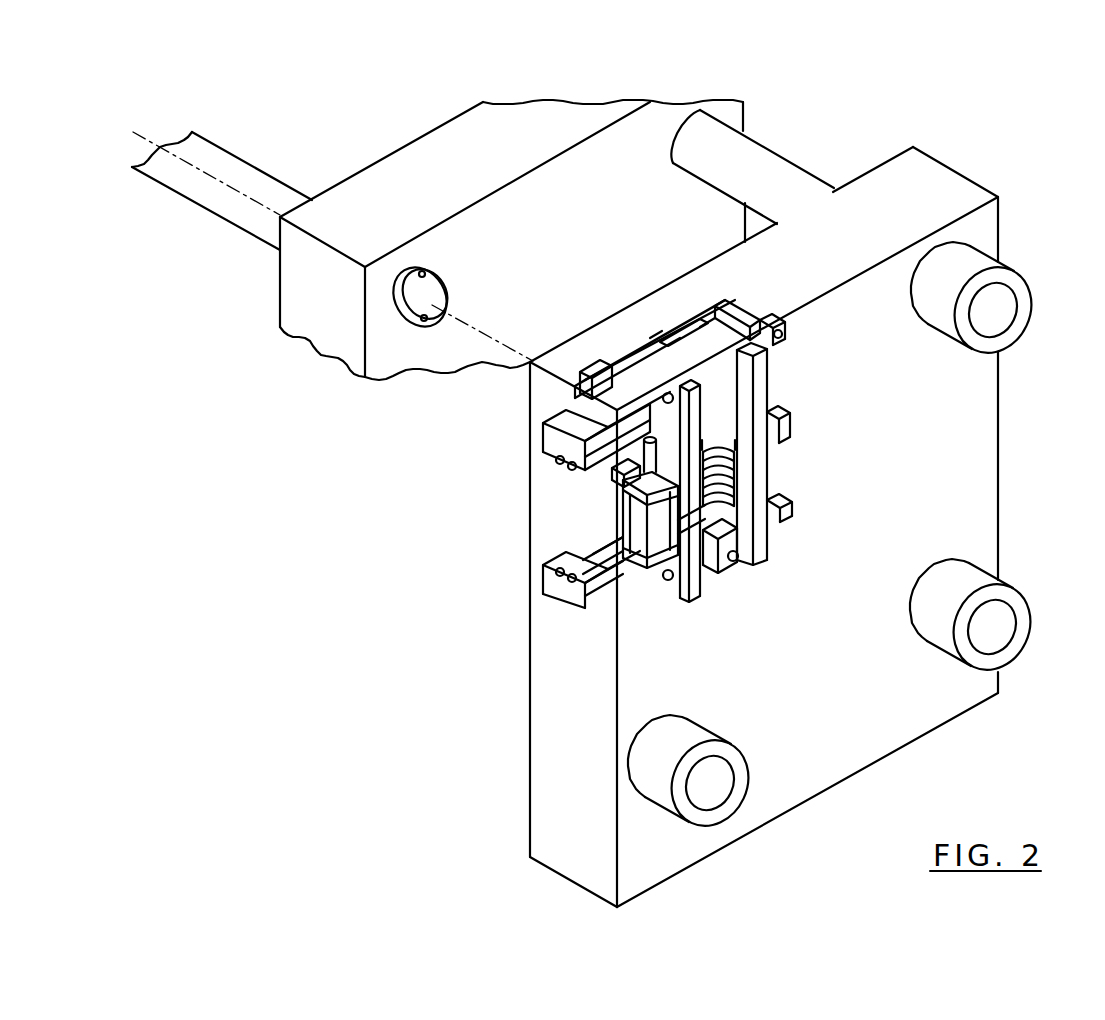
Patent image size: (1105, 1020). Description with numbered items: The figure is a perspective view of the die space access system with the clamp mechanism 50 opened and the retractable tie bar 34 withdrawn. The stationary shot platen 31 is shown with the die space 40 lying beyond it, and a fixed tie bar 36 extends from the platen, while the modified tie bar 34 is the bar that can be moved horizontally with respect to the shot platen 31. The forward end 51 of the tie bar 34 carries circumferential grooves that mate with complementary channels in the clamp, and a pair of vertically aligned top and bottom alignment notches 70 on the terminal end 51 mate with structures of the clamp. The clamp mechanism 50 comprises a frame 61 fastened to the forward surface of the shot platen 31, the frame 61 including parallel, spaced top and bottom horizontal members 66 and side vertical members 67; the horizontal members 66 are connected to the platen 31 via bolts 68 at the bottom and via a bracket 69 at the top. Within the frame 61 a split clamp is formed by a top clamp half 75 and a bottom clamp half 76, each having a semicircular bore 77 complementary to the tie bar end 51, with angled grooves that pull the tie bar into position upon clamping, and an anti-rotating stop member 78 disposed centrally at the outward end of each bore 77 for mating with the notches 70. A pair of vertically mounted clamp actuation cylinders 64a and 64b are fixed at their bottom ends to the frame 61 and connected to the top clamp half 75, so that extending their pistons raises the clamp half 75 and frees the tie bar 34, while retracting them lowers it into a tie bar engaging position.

The stationary shot platen 31 is at (565, 862).
The tie bar 34 is at (271, 177).
The tie bar 36 is at (797, 170).
The die space 40 is at (607, 112).
The clamp mechanism 50 is at (828, 465).
The forward end 51 is at (458, 286).
The frame 61 is at (746, 314).
The clamp actuation cylinder 64a is at (635, 606).
The clamp actuation cylinder 64b is at (802, 408).
The horizontal members 66 is at (748, 616).
The side vertical members 67 is at (626, 466).
The bolts 68 is at (668, 393).
The bracket 69 is at (680, 333).
The alignment notches 70 is at (425, 272).
The top clamp half 75 is at (730, 404).
The bottom clamp half 76 is at (742, 487).
The semicircular bore 77 is at (745, 447).
The anti-rotating stop member 78 is at (570, 423).